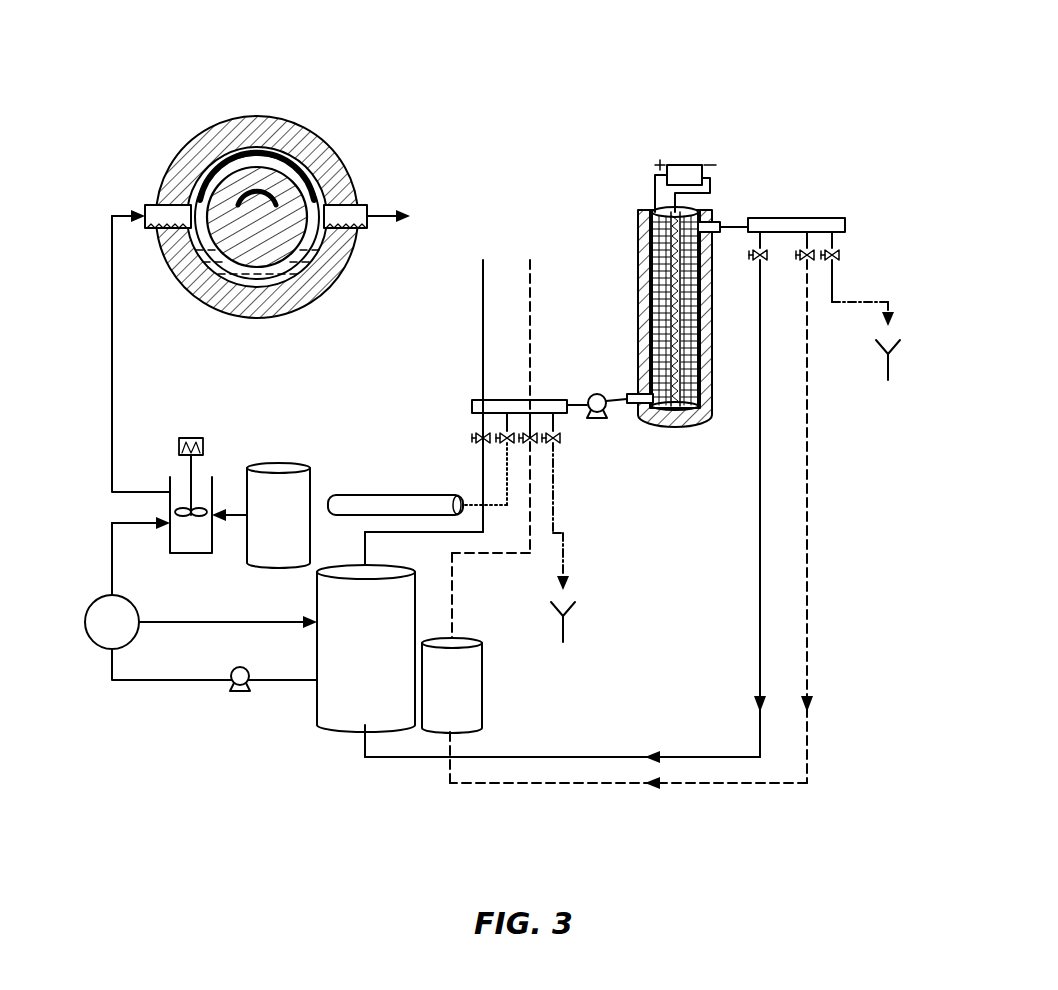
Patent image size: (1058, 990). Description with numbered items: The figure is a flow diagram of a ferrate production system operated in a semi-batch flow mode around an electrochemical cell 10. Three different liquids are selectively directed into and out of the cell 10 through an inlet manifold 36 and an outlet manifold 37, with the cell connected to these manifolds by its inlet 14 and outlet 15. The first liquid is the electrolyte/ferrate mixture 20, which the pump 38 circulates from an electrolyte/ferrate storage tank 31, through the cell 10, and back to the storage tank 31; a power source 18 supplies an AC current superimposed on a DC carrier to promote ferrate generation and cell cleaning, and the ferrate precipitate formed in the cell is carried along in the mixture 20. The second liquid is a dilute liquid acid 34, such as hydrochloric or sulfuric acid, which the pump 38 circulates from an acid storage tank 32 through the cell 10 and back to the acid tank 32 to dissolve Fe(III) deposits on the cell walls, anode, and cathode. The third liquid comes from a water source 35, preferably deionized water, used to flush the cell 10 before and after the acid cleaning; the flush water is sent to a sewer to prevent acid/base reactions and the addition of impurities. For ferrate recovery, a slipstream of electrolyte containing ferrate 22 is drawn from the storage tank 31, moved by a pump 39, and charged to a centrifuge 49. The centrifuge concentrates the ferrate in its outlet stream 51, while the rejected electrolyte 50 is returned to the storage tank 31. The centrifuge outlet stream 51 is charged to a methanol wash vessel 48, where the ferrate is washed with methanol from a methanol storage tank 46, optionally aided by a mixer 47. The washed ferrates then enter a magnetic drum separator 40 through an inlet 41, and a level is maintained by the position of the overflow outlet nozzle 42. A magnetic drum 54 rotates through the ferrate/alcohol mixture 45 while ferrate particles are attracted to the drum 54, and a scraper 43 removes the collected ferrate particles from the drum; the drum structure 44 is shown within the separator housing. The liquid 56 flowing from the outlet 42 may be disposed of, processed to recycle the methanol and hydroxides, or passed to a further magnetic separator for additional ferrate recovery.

The electrochemical cell 10 is at (612, 224).
The reactor inlet 14 is at (634, 393).
The reactor outlet 15 is at (720, 222).
The power source 18 is at (690, 164).
The electrolyte/ferrate mixture 20 is at (368, 546).
The slipstream of electrolyte containing ferrate 22 is at (293, 683).
The electrolyte/ferrate storage tank 31 is at (336, 730).
The acid storage tank 32 is at (483, 700).
The dilute liquid acid 34 is at (455, 600).
The water source 35 is at (430, 494).
The inlet manifold 36 is at (512, 398).
The outlet manifold 37 is at (833, 218).
The pump 38 is at (600, 418).
The feed pump 39 is at (236, 695).
The magnetic drum separator 40 is at (128, 130).
The inlet 41 is at (145, 206).
The overflow outlet nozzle 42 is at (362, 214).
The scraper 43 is at (333, 190).
The inner ring 44 is at (222, 195).
The ferrate/alcohol mixture 45 is at (258, 293).
The methanol storage tank 46 is at (283, 466).
The mixer 47 is at (197, 466).
The methanol wash vessel 48 is at (198, 553).
The centrifuge 49 is at (100, 634).
The rejected electrolyte 50 is at (250, 622).
The centrifuge outlet stream 51 is at (112, 556).
The magnetic drum 54 is at (190, 140).
The liquid 56 is at (390, 223).